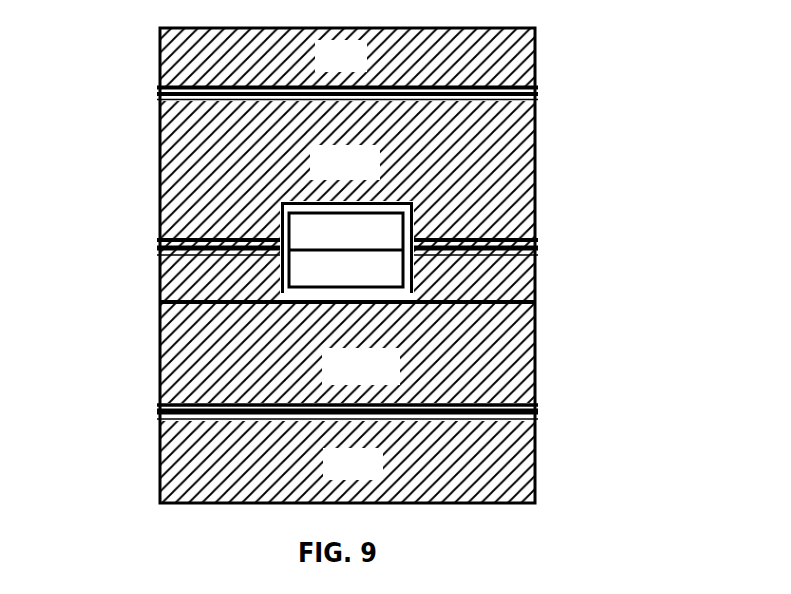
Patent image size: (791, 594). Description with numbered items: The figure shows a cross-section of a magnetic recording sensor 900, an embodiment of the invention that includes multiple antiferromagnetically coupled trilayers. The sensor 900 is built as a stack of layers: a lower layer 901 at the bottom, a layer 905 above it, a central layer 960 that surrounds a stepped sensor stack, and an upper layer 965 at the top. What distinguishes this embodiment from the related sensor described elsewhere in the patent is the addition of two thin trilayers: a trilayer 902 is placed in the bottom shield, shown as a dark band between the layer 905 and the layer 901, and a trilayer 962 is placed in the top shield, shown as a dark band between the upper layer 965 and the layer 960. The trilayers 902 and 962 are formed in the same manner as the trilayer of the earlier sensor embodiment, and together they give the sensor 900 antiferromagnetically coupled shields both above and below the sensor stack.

The magnetic recording sensor 900 is at (708, 40).
The upper dielectric layer 965 is at (347, 57).
The trilayer 962 is at (158, 97).
The interlayer dielectric layer 960 is at (347, 200).
The dielectric layer 905 is at (347, 353).
The trilayer 902 is at (158, 415).
The substrate 901 is at (347, 462).